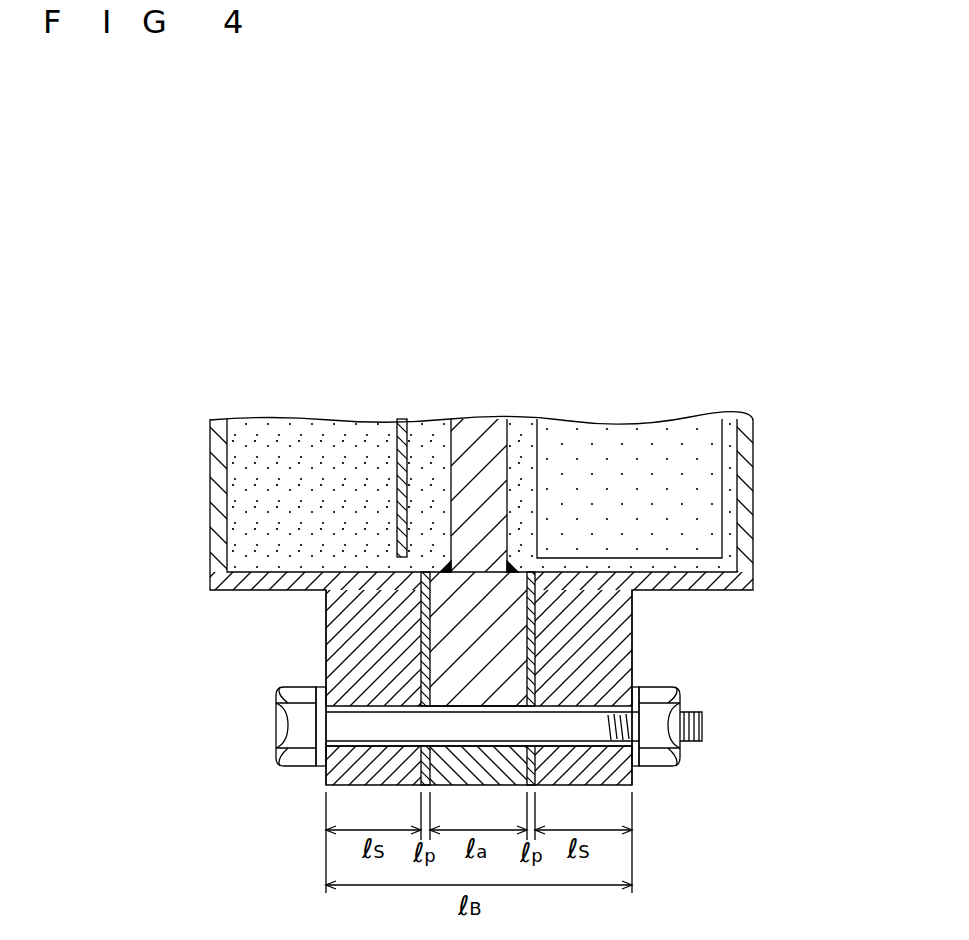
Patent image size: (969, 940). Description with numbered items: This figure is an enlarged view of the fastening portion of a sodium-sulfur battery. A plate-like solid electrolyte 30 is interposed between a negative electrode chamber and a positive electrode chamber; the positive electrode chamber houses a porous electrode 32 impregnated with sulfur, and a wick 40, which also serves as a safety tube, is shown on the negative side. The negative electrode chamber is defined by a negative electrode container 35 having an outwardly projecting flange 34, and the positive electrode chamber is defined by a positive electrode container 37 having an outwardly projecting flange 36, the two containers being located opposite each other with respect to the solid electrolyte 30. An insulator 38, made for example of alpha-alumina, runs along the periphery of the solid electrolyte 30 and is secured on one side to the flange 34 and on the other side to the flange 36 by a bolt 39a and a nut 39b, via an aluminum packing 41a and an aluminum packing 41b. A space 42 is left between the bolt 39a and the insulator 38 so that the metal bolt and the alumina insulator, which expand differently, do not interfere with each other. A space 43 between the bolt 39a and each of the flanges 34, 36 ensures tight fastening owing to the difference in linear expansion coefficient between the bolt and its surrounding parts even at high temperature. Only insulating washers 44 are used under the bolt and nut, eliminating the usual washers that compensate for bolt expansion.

The solid electrolyte 30 is at (473, 428).
The porous electrode 32 is at (637, 437).
The outwardly projecting flange of the negative electrode 34 is at (335, 632).
The negative electrode container 35 is at (210, 484).
The outwardly projecting flange of the positive electrode 36 is at (600, 637).
The positive electrode container 37 is at (753, 488).
The insulator 38 is at (437, 706).
The bolt 39a is at (275, 728).
The nut 39b is at (665, 727).
The wick 40 is at (398, 455).
The aluminum packing 41a is at (420, 601).
The aluminum packing 41b is at (535, 603).
The space 42 is at (486, 707).
The space 43 is at (378, 745).
The insulating washers 44 is at (320, 690).